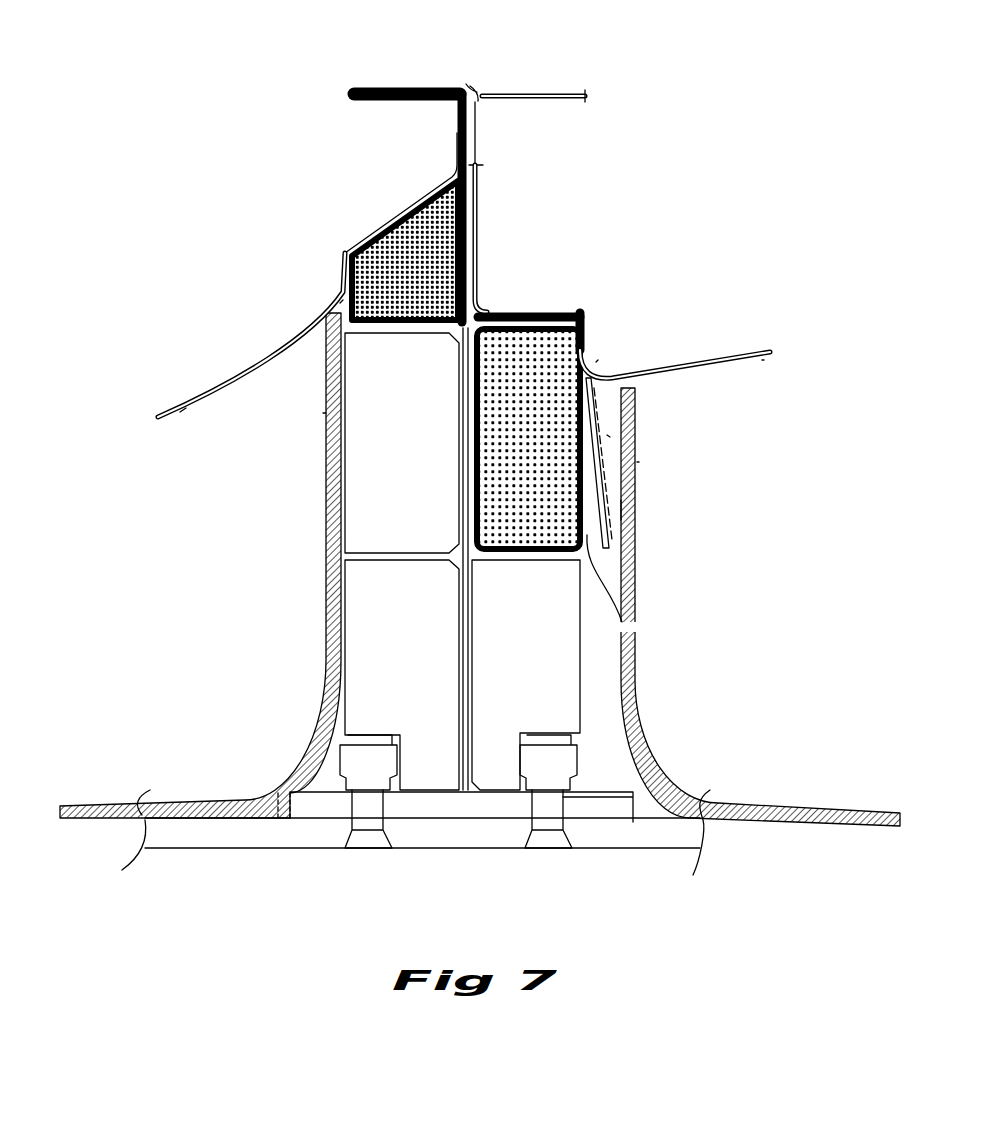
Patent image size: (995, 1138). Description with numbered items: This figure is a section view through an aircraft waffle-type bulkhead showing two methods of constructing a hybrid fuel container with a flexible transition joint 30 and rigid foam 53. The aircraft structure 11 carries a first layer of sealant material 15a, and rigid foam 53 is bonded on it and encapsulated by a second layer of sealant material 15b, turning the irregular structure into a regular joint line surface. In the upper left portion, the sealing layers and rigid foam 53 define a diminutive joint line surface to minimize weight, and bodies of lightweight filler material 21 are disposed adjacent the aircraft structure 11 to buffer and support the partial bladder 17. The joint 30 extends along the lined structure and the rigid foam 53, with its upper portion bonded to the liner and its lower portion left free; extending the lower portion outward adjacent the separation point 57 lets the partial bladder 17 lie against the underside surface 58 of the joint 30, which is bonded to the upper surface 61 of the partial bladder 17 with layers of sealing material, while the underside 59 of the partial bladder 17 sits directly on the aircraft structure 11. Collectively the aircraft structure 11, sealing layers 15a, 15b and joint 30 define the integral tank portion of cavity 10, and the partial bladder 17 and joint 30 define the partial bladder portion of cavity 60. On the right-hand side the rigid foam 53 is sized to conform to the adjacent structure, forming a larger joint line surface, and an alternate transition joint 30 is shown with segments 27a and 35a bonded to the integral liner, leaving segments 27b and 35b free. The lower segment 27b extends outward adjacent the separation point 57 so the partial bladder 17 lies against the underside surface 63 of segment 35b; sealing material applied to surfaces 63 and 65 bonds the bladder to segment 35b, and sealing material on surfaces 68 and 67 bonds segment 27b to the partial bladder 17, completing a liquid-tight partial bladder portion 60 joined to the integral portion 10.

The integral tank portion of cavity 10 is at (220, 166).
The aircraft structure 11 is at (472, 98).
The first layer of sealant material 15a is at (348, 97).
The second layer of sealant material 15b is at (353, 243).
The partial bladder 17 is at (312, 745).
The lightweight filler material 21 is at (369, 458).
The joint segment 27a is at (512, 307).
The joint segment 27b is at (735, 352).
The flexible transition joint 30 is at (245, 378).
The joint segment 35a is at (627, 628).
The joint segment 35b is at (621, 510).
The rigid foam 53 is at (413, 232).
The separation point 57 is at (340, 303).
The underside surface of joint 58 is at (192, 405).
The underside of partial bladder 59 is at (280, 822).
The partial bladder portion of cavity 60 is at (164, 586).
The upper surface of partial bladder 61 is at (323, 413).
The underside surface of joint segment 63 is at (605, 497).
The surface 65 is at (607, 435).
The surface 67 is at (637, 462).
The surface 68 is at (762, 360).